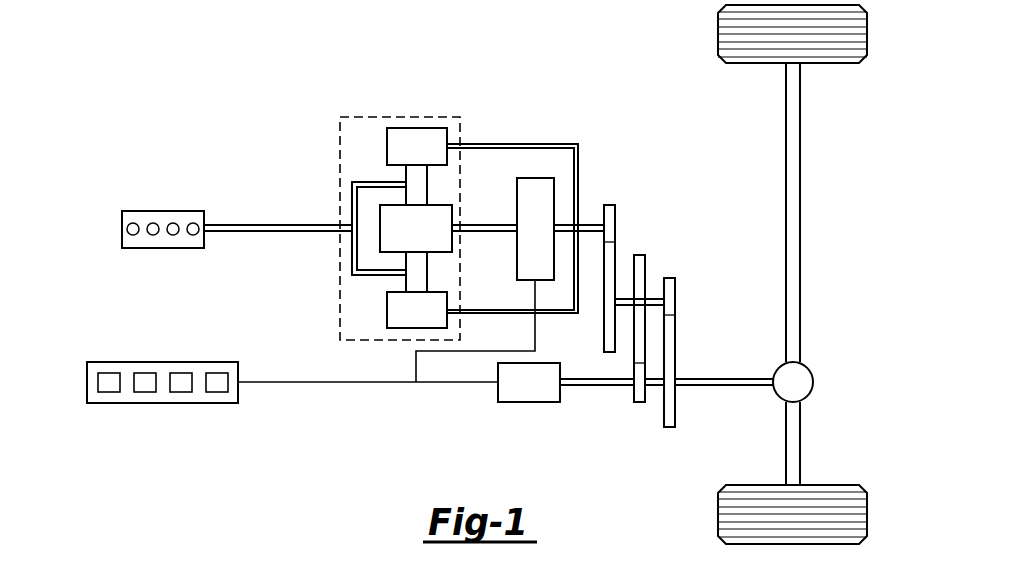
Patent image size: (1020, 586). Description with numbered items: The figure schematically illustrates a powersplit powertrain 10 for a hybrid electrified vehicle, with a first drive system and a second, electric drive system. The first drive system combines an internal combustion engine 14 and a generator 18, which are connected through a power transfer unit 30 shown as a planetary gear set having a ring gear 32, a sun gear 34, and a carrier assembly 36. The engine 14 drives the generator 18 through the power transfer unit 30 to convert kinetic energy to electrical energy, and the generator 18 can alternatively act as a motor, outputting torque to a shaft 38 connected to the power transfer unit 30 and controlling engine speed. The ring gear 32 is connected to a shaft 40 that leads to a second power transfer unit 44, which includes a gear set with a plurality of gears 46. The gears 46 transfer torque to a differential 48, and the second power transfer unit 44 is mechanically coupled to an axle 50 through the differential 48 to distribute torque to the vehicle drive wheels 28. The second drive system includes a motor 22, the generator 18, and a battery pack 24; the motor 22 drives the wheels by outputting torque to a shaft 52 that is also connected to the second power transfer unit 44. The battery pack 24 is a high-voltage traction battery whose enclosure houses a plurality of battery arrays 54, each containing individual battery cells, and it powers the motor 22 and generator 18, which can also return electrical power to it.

The powertrain 10 is at (200, 42).
The engine 14 is at (122, 212).
The generator 18 is at (554, 193).
The motor 22 is at (530, 402).
The battery pack 24 is at (60, 333).
The vehicle drive wheels 28 is at (867, 37).
The power transfer unit 30 is at (461, 118).
The ring gear 32 is at (387, 148).
The sun gear 34 is at (440, 252).
The carrier assembly 36 is at (352, 208).
The shaft 38 is at (487, 223).
The shaft 40 is at (593, 233).
The second power transfer unit 44 is at (636, 214).
The gears 46 is at (647, 263).
The differential 48 is at (813, 382).
The axle 50 is at (800, 215).
The shaft 52 is at (598, 387).
The battery arrays 54 is at (110, 392).